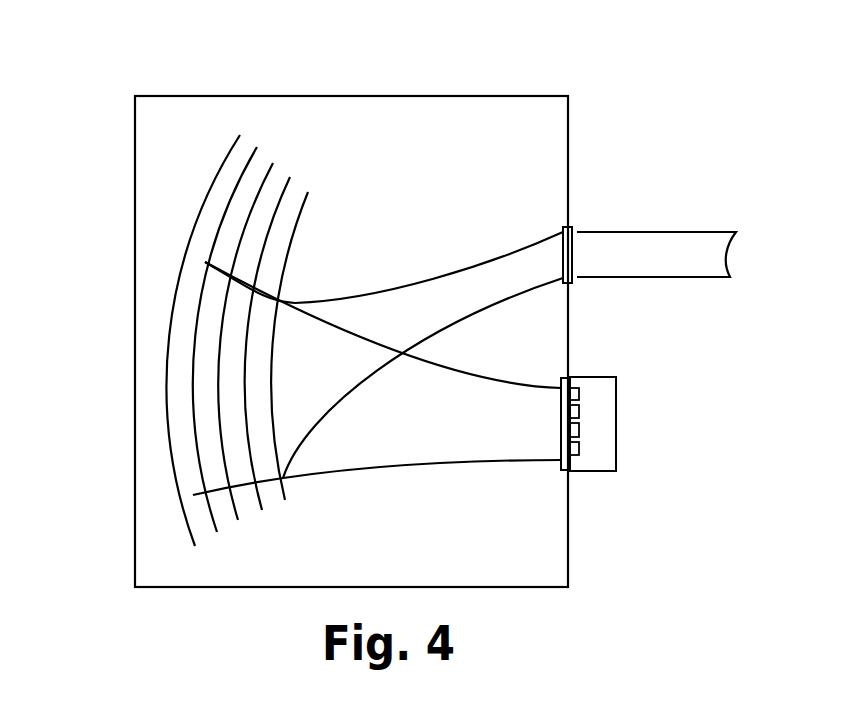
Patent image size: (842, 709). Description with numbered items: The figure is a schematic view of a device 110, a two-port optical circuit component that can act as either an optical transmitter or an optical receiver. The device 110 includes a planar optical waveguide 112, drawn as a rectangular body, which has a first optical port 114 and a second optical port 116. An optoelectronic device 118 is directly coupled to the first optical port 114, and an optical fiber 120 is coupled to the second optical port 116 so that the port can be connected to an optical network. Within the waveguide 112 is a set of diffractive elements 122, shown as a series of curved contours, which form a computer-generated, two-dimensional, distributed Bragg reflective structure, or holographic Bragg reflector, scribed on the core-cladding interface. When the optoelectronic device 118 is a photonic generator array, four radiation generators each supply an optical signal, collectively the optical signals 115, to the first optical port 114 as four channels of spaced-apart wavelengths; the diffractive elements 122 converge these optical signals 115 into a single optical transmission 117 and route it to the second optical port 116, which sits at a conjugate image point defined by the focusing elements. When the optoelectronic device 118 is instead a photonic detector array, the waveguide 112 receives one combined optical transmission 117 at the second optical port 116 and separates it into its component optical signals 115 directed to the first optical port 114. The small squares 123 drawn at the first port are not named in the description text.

The device 110 is at (299, 307).
The planar optical waveguide 112 is at (268, 95).
The first optical port 114 is at (563, 472).
The optical signals 115 is at (460, 455).
The second optical port 116 is at (567, 225).
The optical transmission 117 is at (493, 268).
The optoelectronic device 118 is at (592, 473).
The optical fiber 120 is at (688, 238).
The diffractive elements 122 is at (160, 410).
The detector elements 123 is at (571, 385).